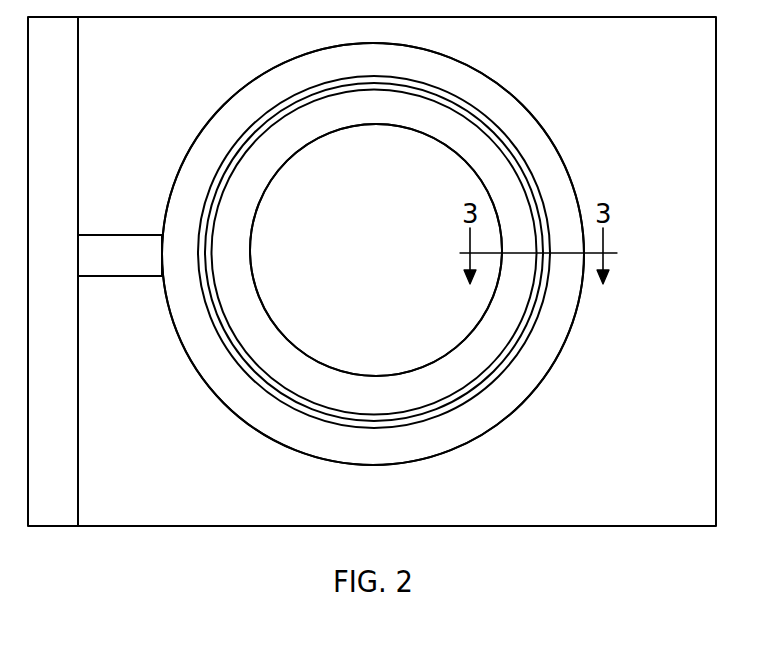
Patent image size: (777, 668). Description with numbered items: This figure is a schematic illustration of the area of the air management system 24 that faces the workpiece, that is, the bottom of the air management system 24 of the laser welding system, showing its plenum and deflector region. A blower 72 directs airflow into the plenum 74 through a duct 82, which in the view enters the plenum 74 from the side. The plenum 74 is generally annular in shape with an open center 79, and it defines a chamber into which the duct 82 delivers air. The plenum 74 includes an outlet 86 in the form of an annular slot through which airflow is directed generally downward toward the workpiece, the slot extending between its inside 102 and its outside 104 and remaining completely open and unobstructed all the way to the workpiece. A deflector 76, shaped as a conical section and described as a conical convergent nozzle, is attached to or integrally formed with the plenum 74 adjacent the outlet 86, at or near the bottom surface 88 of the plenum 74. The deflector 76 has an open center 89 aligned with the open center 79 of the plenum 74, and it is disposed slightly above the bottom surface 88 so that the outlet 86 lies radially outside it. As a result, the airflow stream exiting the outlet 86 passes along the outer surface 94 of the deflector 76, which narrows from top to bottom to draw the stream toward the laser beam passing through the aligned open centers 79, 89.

The air management system 24 is at (595, 132).
The blower 72 is at (67, 73).
The plenum 74 is at (483, 90).
The deflector 76 is at (455, 375).
The open center 79 is at (388, 260).
The duct 82 is at (134, 264).
The outlet 86 is at (527, 167).
The bottom surface 88 is at (543, 350).
The open center 89 is at (412, 298).
The outer surface 94 is at (392, 114).
The inside 102 is at (502, 137).
The outside 104 is at (487, 118).